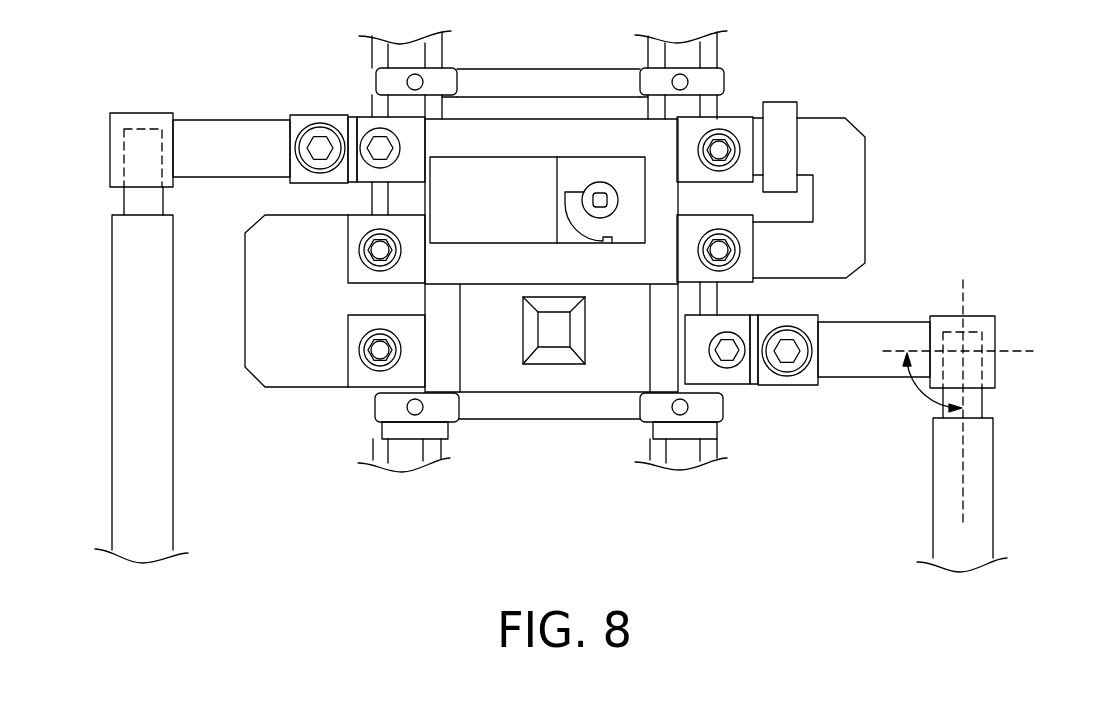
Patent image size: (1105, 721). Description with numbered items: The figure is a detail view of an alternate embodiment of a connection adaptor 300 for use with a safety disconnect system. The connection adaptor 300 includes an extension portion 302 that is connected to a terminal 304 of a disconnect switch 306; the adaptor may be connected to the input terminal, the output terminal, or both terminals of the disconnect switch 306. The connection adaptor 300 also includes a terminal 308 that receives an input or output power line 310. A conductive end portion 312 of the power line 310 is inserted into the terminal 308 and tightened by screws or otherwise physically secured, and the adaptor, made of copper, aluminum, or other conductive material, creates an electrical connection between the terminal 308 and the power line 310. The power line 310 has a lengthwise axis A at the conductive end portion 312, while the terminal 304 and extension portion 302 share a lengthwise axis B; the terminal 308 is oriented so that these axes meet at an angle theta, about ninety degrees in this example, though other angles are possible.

The connection adaptor 300 is at (135, 92).
The extension portion 302 is at (212, 121).
The terminal 304 is at (314, 114).
The disconnect switch 306 is at (588, 142).
The terminal 308 is at (110, 153).
The power line 310 is at (1005, 469).
The conductive end portion 312 is at (982, 410).